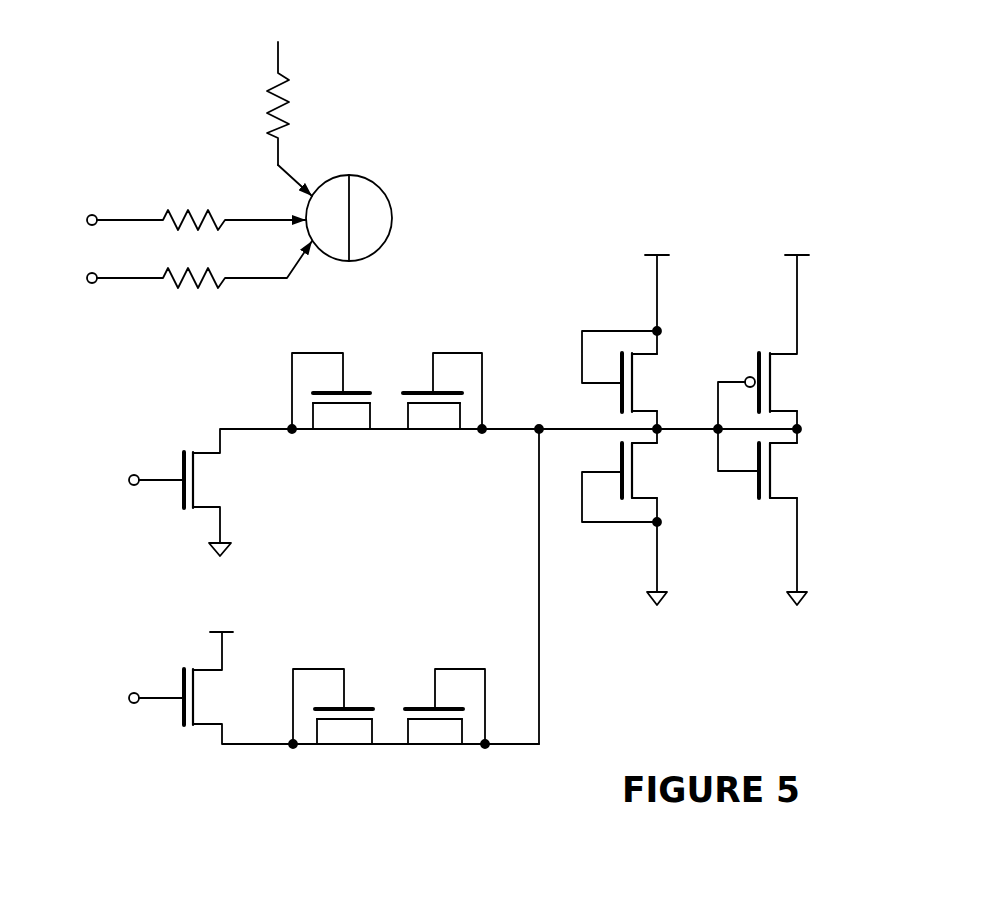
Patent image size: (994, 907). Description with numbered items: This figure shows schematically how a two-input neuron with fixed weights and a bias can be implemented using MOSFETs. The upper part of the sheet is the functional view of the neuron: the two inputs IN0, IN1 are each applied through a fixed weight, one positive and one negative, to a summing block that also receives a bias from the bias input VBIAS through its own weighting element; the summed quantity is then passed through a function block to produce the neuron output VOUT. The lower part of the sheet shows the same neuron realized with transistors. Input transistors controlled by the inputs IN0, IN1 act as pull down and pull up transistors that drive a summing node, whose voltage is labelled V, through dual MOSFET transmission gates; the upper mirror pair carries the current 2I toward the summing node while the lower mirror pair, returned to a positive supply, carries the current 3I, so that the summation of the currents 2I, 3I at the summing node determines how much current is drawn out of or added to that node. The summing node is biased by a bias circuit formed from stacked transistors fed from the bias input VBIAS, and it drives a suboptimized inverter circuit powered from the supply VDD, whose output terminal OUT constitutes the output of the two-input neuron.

The bias voltage input VBIAS is at (467, 182).
The first input IN0 is at (170, 369).
The second input IN1 is at (287, 492).
The summing/function block output VOUT is at (392, 218).
The current 2I is at (341, 462).
The summing node voltage V-sigma V is at (537, 423).
The current 3I is at (440, 773).
The supply voltage VDD is at (796, 288).
The output OUT is at (797, 429).